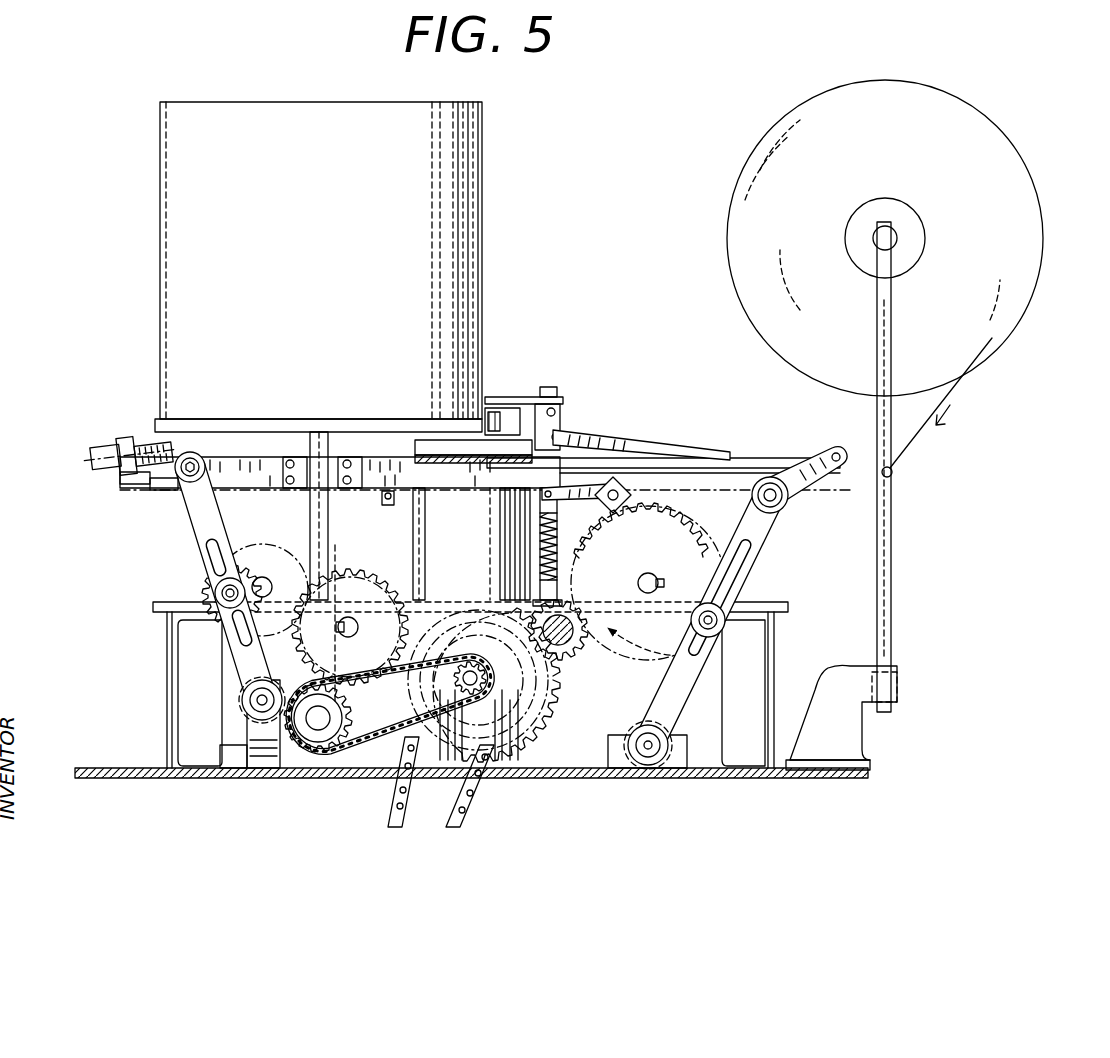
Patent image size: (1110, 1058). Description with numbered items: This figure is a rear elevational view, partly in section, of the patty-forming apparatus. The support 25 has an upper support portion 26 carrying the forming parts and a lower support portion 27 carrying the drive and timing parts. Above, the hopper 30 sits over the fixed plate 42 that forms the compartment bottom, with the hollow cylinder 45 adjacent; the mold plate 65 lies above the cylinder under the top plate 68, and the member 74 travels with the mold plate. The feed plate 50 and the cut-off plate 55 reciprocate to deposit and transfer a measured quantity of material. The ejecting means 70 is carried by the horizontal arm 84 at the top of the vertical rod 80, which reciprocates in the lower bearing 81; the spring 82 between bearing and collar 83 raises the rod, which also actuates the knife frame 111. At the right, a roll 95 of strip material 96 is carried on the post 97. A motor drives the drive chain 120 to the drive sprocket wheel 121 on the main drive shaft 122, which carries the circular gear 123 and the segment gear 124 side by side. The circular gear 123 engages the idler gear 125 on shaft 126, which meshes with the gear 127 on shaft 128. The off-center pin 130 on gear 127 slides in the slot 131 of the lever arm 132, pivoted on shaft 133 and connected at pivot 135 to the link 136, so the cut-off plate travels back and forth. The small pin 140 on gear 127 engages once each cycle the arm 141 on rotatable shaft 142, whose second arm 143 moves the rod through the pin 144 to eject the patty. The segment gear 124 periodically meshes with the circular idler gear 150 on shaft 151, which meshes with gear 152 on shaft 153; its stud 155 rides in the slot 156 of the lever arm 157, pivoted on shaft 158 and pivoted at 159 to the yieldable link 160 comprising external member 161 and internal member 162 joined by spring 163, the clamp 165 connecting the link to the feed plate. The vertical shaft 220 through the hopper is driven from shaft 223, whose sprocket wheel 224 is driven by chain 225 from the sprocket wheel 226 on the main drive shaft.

The hopper 30 is at (490, 186).
The roll of strip material 95 is at (1036, 188).
The strip material 96 is at (975, 385).
The post 97 is at (893, 562).
The support 25 is at (100, 607).
The upper support portion 26 is at (135, 545).
The lower support portion 27 is at (140, 675).
The fixed plate 42 is at (262, 493).
The hollow cylinder 45 is at (470, 548).
The feed plate 50 is at (135, 480).
The cut-off plate 55 is at (822, 448).
The mold plate 65 is at (452, 440).
The top plate 68 is at (425, 452).
The ejecting means 70 is at (500, 398).
The member 74 is at (388, 505).
The vertical rod 80 is at (556, 392).
The lower bearing 81 is at (552, 582).
The spring 82 is at (557, 545).
The collar 83 is at (545, 500).
The horizontal arm 84 is at (520, 395).
The frame 111 is at (565, 435).
The drive chain 120 is at (475, 818).
The drive sprocket wheel 121 is at (478, 680).
The main drive shaft 122 is at (477, 680).
The circular gear 123 is at (435, 600).
The segment gear 124 is at (555, 735).
The idler gear 125 is at (575, 650).
The shaft 126 is at (565, 612).
The gear 127 is at (649, 581).
The shaft 128 is at (655, 578).
The off-center pin 130 is at (722, 625).
The slot 131 is at (775, 542).
The lever arm 132 is at (700, 680).
The shaft 133 is at (652, 745).
The pivot 135 is at (782, 500).
The link 136 is at (812, 490).
The small pin 140 is at (682, 632).
The arm 141 is at (655, 500).
The rotatable shaft 142 is at (618, 482).
The second arm 143 is at (600, 480).
The pin 144 is at (540, 492).
The circular idler gear 150 is at (350, 625).
The shaft 151 is at (358, 627).
The gear 152 is at (280, 545).
The shaft 153 is at (265, 580).
The stud 155 is at (222, 592).
The slot 156 is at (215, 560).
The lever arm 157 is at (232, 655).
The shaft 158 is at (258, 702).
The pivot 159 is at (188, 475).
The yieldable link 160 is at (99, 424).
The external member 161 is at (89, 454).
The internal member 162 is at (120, 486).
The spring 163 is at (153, 454).
The clamp 165 is at (126, 456).
The rotatable vertical shaft 220 is at (330, 530).
The shaft 223 is at (316, 730).
The sprocket wheel 224 is at (318, 745).
The chain 225 is at (372, 752).
The sprocket wheel 226 is at (478, 695).